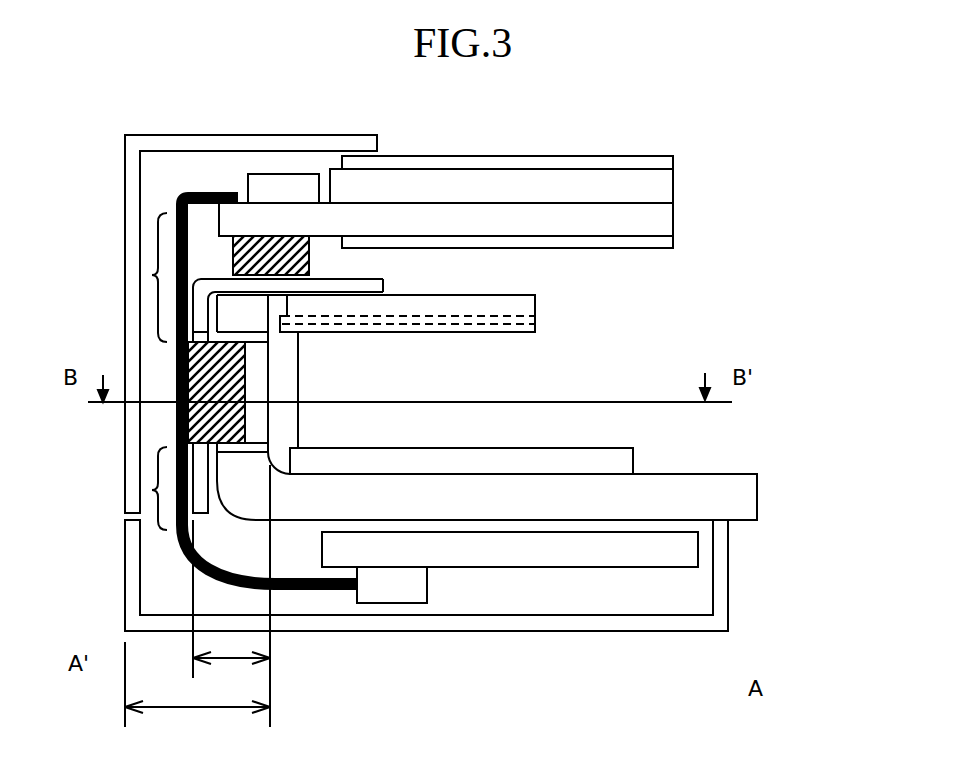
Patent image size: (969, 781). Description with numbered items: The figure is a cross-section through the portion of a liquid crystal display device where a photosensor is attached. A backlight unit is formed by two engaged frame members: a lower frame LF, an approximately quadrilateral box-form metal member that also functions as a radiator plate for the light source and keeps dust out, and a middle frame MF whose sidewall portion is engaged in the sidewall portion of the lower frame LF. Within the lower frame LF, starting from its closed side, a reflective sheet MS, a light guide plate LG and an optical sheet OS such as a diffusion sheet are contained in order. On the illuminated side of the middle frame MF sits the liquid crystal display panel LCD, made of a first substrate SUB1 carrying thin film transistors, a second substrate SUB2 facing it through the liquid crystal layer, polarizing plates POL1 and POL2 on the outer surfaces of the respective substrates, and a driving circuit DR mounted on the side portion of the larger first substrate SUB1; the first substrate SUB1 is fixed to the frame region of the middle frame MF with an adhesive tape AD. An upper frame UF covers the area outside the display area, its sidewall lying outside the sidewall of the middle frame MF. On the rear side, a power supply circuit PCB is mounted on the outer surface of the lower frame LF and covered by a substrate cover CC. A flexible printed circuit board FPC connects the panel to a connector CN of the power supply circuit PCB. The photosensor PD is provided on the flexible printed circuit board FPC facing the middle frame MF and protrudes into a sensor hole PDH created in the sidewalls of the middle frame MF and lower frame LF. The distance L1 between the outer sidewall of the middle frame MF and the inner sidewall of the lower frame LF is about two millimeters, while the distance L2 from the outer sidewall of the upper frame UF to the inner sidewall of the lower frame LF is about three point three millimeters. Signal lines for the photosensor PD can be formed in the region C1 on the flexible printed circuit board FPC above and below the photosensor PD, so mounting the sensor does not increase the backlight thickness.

The upper frame UF is at (133, 170).
The driving circuit DR is at (288, 183).
The adhesive tape AD is at (233, 253).
The region C1 is at (153, 277).
The polarizing plate POL2 is at (663, 163).
The second substrate SUB2 is at (663, 187).
The first substrate SUB1 is at (663, 222).
The polarizing plate POL1 is at (663, 243).
The liquid crystal display panel LCD is at (813, 142).
The middle frame MF is at (385, 283).
The optical sheet OS is at (548, 293).
The light guide plate LG is at (543, 360).
The sensor hole PDH is at (262, 348).
The photosensor PD is at (253, 418).
The reflective sheet MS is at (613, 460).
The lower frame LF is at (735, 498).
The power supply circuit PCB is at (687, 551).
The substrate cover CC is at (722, 593).
The connector CN is at (398, 593).
The flexible printed circuit board FPC is at (180, 542).
The distance L1 is at (231, 596).
The distance L2 is at (197, 693).